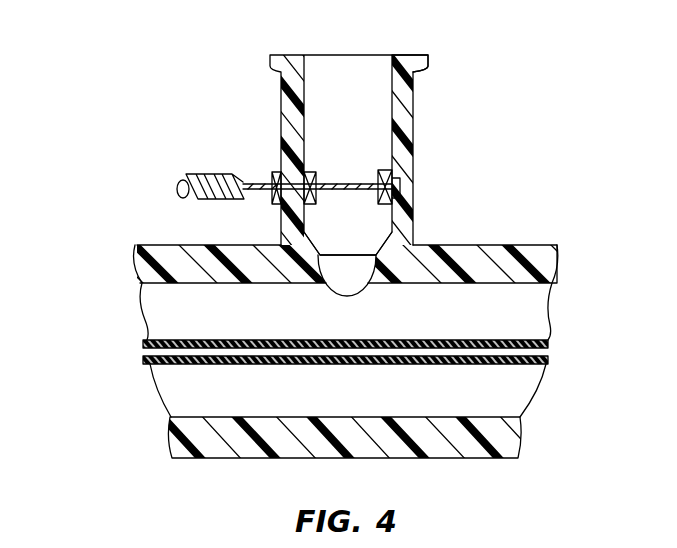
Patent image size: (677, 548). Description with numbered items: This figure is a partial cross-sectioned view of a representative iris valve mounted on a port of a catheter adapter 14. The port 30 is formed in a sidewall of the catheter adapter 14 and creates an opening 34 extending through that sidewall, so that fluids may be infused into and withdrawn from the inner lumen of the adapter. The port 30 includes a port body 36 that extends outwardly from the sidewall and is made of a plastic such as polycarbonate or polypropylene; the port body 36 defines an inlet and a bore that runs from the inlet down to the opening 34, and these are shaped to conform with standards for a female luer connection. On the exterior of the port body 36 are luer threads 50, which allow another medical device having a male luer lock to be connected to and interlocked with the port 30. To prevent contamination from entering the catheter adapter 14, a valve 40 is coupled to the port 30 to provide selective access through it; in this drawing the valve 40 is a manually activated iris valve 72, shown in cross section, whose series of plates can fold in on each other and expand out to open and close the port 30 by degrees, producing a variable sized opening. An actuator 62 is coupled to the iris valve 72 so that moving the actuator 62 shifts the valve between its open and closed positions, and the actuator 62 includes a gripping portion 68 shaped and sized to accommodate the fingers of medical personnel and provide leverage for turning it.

The catheter adapter 14 is at (537, 247).
The port 30 is at (134, 154).
The opening 34 is at (323, 292).
The port body 36 is at (407, 123).
The valve 40 is at (362, 182).
The luer threads 50 is at (428, 60).
The actuator 62 is at (280, 188).
The gripping portion 68 is at (180, 181).
The iris valve 72 is at (335, 180).